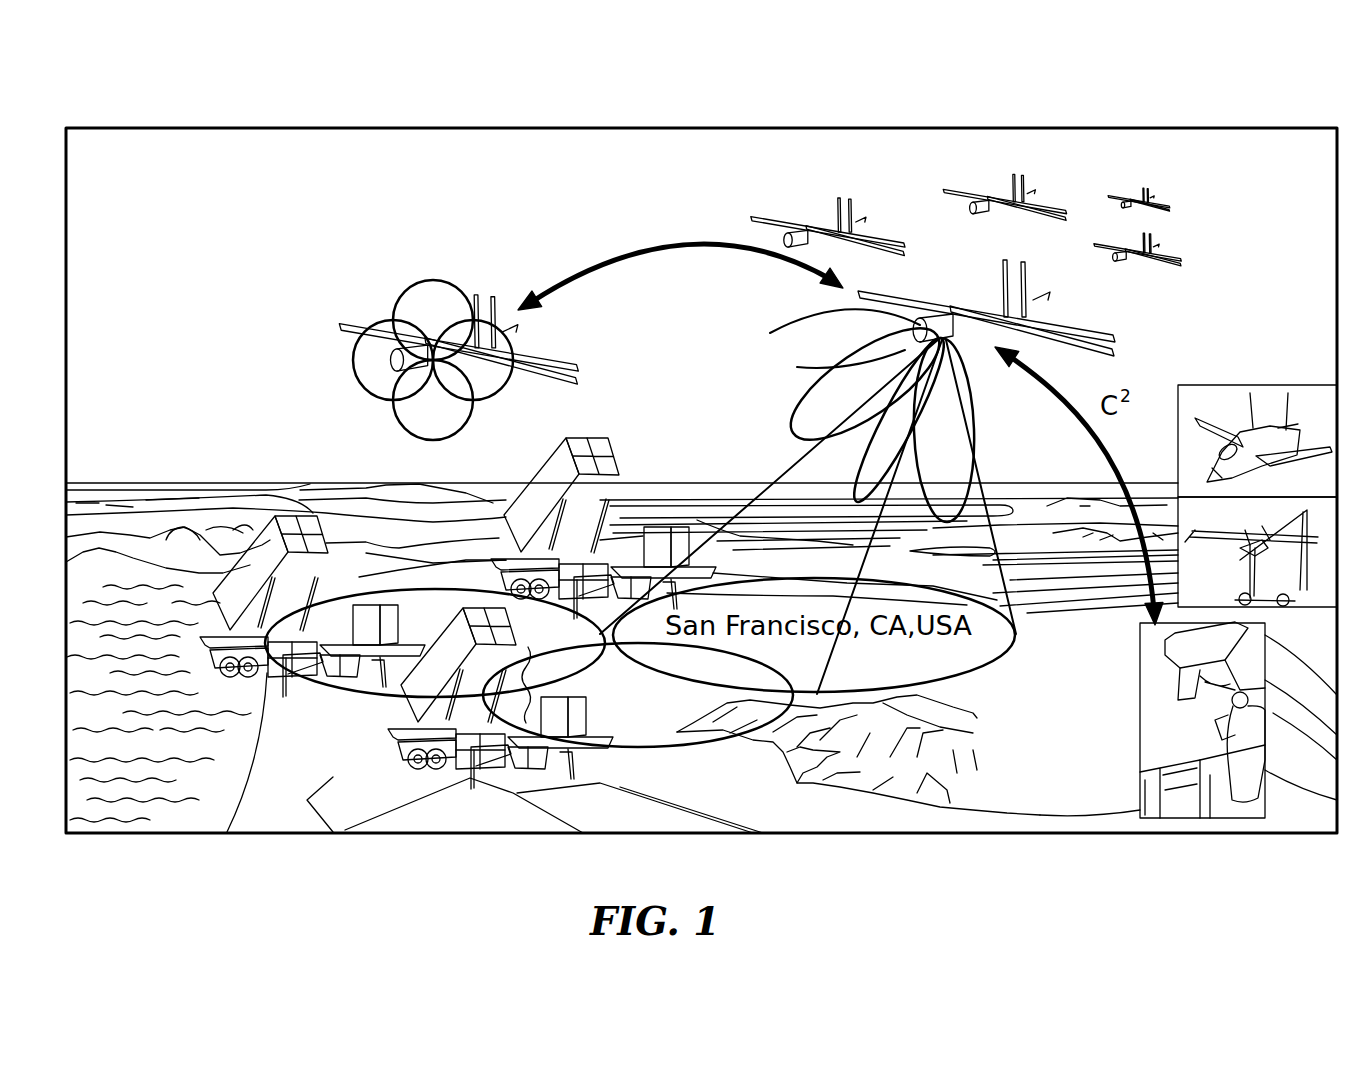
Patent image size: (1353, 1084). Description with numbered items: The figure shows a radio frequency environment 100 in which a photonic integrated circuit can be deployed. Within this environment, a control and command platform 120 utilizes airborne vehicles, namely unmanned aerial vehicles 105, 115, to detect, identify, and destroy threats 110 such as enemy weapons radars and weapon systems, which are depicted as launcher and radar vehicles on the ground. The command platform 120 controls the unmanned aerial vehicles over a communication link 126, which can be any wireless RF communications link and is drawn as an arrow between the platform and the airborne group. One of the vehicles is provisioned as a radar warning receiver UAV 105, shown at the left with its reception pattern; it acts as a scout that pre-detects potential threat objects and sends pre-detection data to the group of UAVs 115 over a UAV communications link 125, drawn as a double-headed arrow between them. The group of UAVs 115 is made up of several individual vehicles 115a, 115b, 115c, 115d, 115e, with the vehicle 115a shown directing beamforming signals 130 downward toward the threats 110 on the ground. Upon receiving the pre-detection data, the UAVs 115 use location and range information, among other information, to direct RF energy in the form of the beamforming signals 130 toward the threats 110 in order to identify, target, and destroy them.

The radio frequency environment 100 is at (212, 98).
The radar warning receiver UAV 105 is at (369, 303).
The threats 110 is at (308, 680).
The unmanned aerial vehicles 115 is at (1019, 257).
The unmanned aerial vehicle 115a is at (953, 313).
The unmanned aerial vehicle 115b is at (790, 227).
The unmanned aerial vehicle 115c is at (975, 200).
The unmanned aerial vehicle 115d is at (1127, 197).
The unmanned aerial vehicle 115e is at (1143, 278).
The control and command platform 120 is at (1079, 798).
The UAV communications link 125 is at (669, 244).
The communication link 126 is at (1097, 450).
The beamforming signals 130 is at (765, 395).